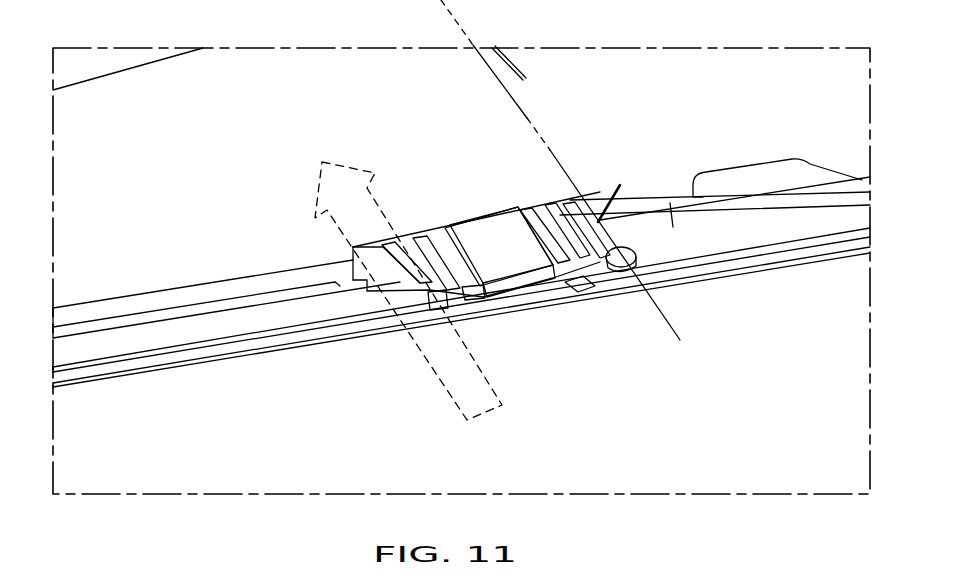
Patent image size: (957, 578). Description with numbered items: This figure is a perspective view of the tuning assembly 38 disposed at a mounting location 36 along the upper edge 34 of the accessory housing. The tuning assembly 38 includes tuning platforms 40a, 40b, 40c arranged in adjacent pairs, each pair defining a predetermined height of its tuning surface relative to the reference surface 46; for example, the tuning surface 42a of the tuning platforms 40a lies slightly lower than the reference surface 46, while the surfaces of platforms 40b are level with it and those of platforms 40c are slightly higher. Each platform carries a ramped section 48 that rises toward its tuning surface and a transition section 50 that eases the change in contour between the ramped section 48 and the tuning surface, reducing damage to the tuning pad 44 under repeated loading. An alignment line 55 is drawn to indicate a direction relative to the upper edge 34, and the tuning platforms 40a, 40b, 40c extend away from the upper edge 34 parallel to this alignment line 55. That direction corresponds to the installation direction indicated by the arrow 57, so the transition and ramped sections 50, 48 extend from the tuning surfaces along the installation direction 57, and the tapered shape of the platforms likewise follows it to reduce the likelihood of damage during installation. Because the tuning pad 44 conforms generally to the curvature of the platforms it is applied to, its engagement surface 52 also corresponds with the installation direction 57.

The upper edge 34 is at (758, 268).
The mounting location 36 is at (515, 207).
The tuning assembly 38 is at (766, 139).
The tuning platform 40a is at (567, 283).
The tuning platform 40b is at (498, 290).
The tuning platform 40c is at (485, 312).
The tuning surface 42a is at (615, 228).
The tuning pad 44 is at (495, 268).
The reference surface 46 is at (628, 265).
The ramped section 48 is at (408, 263).
The transition section 50 is at (575, 250).
The engagement surface 52 is at (490, 235).
The alignment line 55 is at (520, 100).
The installation direction arrow 57 is at (438, 377).